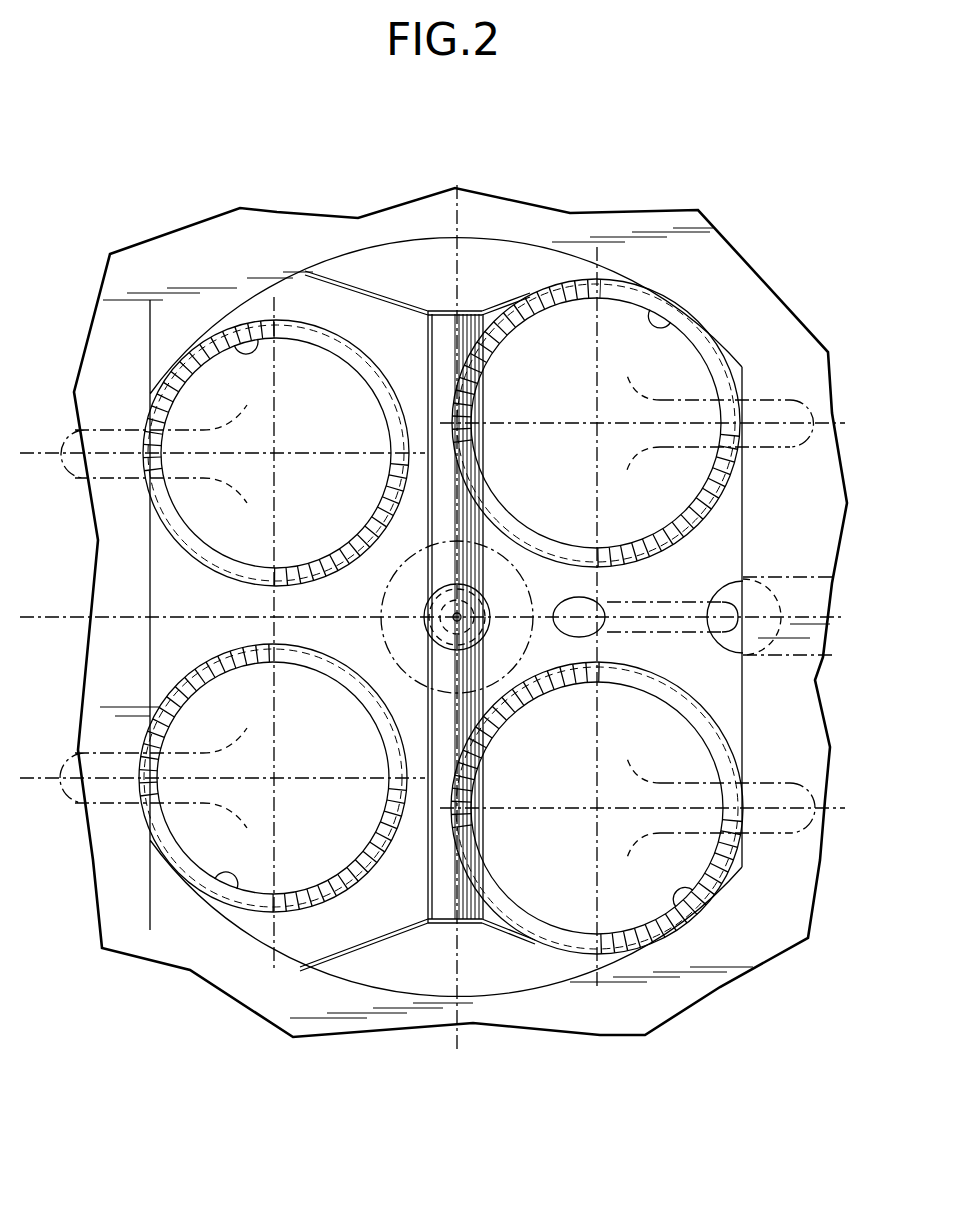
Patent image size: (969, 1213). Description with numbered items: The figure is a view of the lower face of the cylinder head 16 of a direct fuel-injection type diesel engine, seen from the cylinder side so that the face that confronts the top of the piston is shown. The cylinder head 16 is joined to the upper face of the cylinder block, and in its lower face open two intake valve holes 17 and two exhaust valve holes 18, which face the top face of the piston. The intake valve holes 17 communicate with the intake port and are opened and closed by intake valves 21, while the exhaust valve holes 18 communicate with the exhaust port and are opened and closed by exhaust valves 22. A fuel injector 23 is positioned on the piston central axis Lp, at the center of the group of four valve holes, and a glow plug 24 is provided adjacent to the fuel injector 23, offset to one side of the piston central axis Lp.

The cylinder head 16 is at (735, 242).
The intake valve hole 17 is at (670, 328).
The exhaust valve hole 18 is at (238, 340).
The intake valve 21 is at (700, 385).
The exhaust valve 22 is at (185, 428).
The fuel injector 23 is at (433, 632).
The glow plug 24 is at (790, 577).
The piston central axis Lp is at (462, 612).